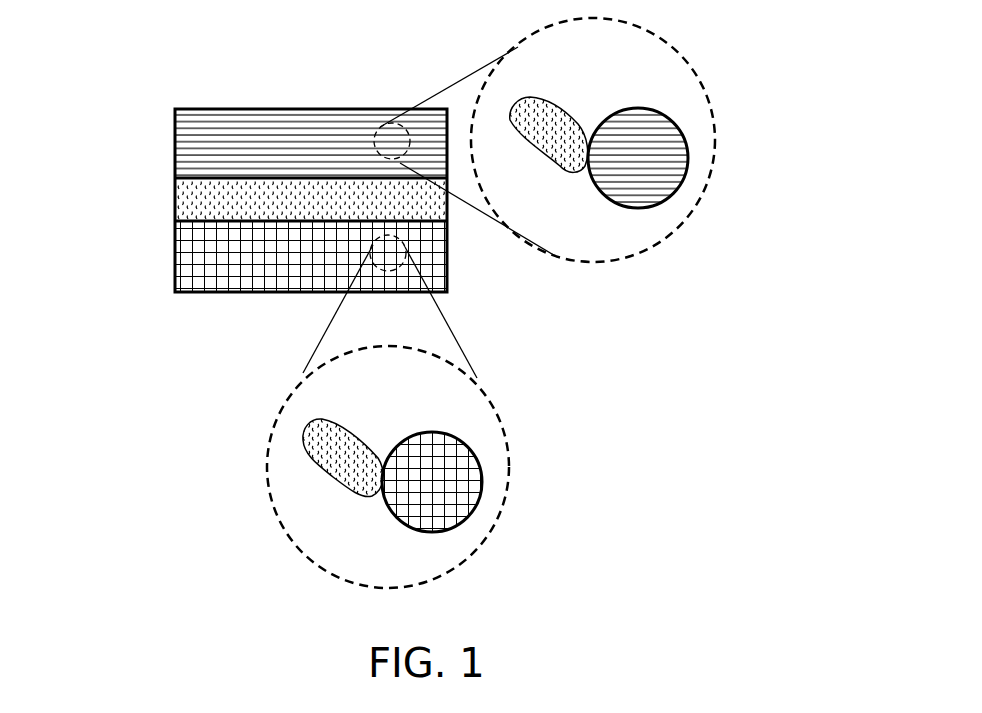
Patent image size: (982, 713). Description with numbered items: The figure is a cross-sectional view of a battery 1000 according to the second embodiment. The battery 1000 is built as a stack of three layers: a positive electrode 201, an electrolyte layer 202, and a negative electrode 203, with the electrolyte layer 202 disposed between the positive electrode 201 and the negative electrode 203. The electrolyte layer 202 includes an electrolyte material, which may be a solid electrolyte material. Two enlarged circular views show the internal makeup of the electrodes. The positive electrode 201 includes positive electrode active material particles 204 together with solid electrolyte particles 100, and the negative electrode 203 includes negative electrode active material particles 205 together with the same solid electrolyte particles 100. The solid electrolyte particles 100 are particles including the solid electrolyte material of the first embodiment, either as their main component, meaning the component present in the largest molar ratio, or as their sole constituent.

The battery 1000 is at (251, 163).
The positive electrode 201 is at (212, 128).
The electrolyte layer 202 is at (212, 193).
The negative electrode 203 is at (212, 253).
The positive electrode active material particles 204 is at (653, 157).
The negative electrode active material particles 205 is at (447, 477).
The solid electrolyte particles 100 is at (566, 152).